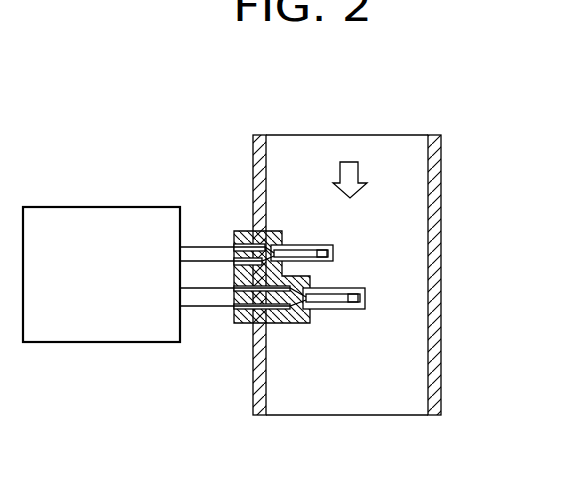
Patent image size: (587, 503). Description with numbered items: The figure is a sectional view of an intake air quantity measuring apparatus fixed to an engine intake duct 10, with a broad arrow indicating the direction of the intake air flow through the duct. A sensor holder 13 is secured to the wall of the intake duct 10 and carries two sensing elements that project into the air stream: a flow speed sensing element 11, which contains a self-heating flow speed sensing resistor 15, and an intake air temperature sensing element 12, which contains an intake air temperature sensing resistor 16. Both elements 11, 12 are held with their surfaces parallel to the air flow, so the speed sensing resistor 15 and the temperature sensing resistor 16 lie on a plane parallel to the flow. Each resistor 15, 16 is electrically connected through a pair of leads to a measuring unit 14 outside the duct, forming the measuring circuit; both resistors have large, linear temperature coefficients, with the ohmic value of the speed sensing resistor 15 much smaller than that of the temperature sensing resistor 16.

The engine intake duct 10 is at (437, 183).
The flow speed sensing element 11 is at (348, 310).
The intake air temperature sensing element 12 is at (305, 246).
The sensor holder 13 is at (281, 323).
The measuring unit 14 is at (142, 207).
The self-heating flow speed sensing resistor 15 is at (365, 298).
The intake air temperature sensing resistor 16 is at (330, 253).